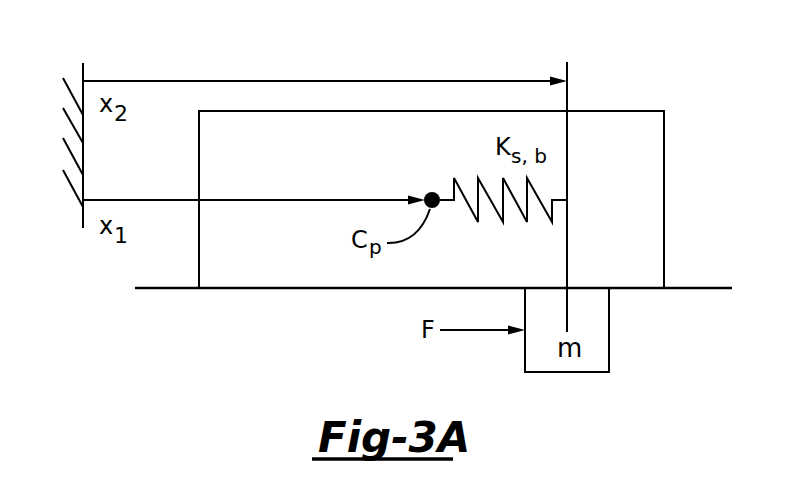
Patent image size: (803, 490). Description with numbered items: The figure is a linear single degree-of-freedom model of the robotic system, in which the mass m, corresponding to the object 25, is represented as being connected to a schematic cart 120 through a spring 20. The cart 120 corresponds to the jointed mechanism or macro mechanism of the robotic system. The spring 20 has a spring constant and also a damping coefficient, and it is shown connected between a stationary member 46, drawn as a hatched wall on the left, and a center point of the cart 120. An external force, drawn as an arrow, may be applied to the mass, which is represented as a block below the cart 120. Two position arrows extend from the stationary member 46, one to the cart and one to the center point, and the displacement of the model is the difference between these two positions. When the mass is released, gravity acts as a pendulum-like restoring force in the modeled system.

The stationary member 46 is at (72, 83).
The spring 20 is at (440, 162).
The cart 120 is at (664, 123).
The object 25 is at (609, 342).